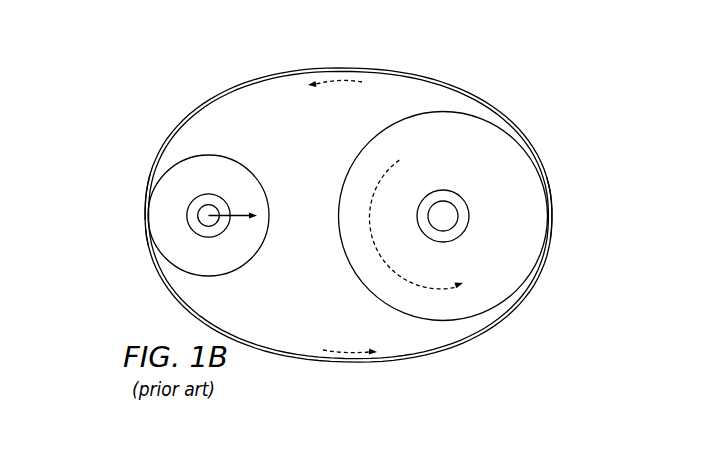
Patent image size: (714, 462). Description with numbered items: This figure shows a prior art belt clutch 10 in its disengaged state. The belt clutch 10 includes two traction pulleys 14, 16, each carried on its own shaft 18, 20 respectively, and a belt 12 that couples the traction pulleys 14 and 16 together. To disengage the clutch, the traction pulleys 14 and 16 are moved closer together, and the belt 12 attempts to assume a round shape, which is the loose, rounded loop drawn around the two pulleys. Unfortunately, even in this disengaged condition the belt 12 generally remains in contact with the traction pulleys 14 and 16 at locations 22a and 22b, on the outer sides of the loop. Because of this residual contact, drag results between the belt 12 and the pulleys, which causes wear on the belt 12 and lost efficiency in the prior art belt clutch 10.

The belt clutch 10 is at (157, 125).
The belt 12 is at (248, 338).
The traction pulley 14 is at (195, 184).
The traction pulley 16 is at (432, 158).
The shaft 18 is at (207, 222).
The shaft 20 is at (443, 215).
The location 22a is at (133, 214).
The location 22b is at (553, 177).